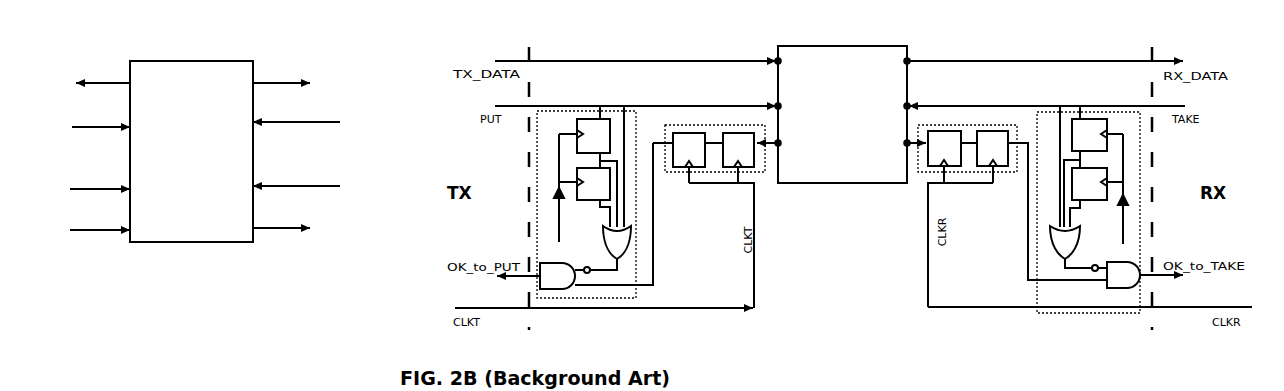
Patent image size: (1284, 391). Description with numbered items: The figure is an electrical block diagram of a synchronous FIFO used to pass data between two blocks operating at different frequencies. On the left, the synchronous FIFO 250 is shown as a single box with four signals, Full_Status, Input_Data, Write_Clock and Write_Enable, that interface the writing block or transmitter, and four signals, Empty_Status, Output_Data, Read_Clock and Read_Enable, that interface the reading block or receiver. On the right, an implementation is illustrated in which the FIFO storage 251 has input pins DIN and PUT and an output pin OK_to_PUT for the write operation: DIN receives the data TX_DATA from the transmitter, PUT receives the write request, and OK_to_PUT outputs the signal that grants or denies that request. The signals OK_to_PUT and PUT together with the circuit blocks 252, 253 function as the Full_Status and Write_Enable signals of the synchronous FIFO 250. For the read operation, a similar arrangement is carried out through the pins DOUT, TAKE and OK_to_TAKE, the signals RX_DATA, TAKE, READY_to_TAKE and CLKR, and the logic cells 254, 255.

The synchronous FIFO 250 is at (190, 52).
The FIFO storage 251 is at (832, 33).
The circuit block 252 is at (730, 124).
The circuit block 253 is at (641, 293).
The logic cell 254 is at (988, 123).
The logic cell 255 is at (1034, 293).